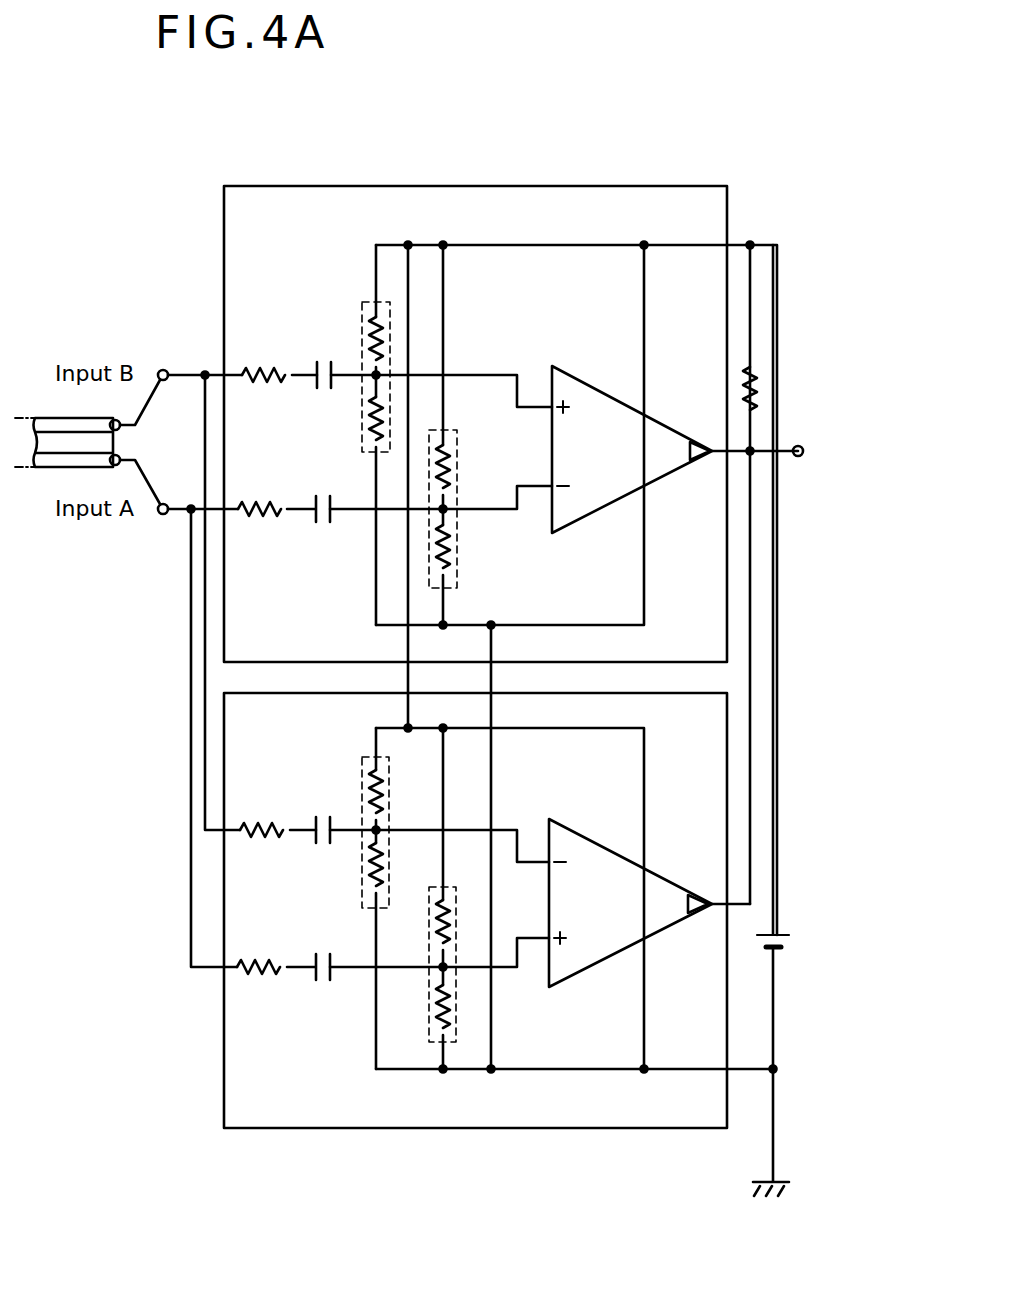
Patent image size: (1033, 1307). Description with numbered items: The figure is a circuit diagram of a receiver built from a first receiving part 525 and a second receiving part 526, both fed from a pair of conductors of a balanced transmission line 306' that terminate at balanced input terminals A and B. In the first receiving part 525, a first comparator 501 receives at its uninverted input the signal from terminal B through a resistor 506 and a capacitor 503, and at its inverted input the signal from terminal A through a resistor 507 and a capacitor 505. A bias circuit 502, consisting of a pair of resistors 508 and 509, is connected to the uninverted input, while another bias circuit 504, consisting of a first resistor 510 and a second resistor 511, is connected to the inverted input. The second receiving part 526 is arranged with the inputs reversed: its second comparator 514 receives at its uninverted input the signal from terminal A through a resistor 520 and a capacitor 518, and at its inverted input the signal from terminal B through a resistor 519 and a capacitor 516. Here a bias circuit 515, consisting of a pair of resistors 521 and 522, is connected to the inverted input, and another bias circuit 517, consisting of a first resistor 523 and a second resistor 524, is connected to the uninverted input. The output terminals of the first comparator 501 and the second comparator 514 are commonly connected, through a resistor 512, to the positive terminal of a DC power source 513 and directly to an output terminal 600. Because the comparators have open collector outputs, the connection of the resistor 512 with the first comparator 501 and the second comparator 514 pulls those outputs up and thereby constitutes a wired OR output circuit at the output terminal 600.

The balanced transmission line 306' is at (87, 469).
The first comparator 501 is at (594, 384).
The bias circuit 502 is at (363, 302).
The capacitor 503 is at (314, 362).
The bias circuit 504 is at (448, 434).
The capacitor 505 is at (320, 472).
The resistor 506 is at (268, 382).
The resistor 507 is at (265, 516).
The resistor 508 is at (368, 336).
The resistor 509 is at (371, 407).
The first resistor 510 is at (450, 468).
The second resistor 511 is at (450, 567).
The resistor 512 is at (758, 397).
The DC power source 513 is at (774, 940).
The second comparator 514 is at (590, 838).
The bias circuit 515 is at (390, 788).
The capacitor 516 is at (320, 819).
The bias circuit 517 is at (452, 892).
The capacitor 518 is at (317, 962).
The resistor 519 is at (264, 837).
The resistor 520 is at (262, 974).
The resistor 521 is at (365, 783).
The resistor 522 is at (365, 882).
The first resistor 523 is at (438, 932).
The second resistor 524 is at (440, 1002).
The first receiving part 525 is at (264, 188).
The second receiving part 526 is at (226, 1130).
The output terminal 600 is at (799, 445).